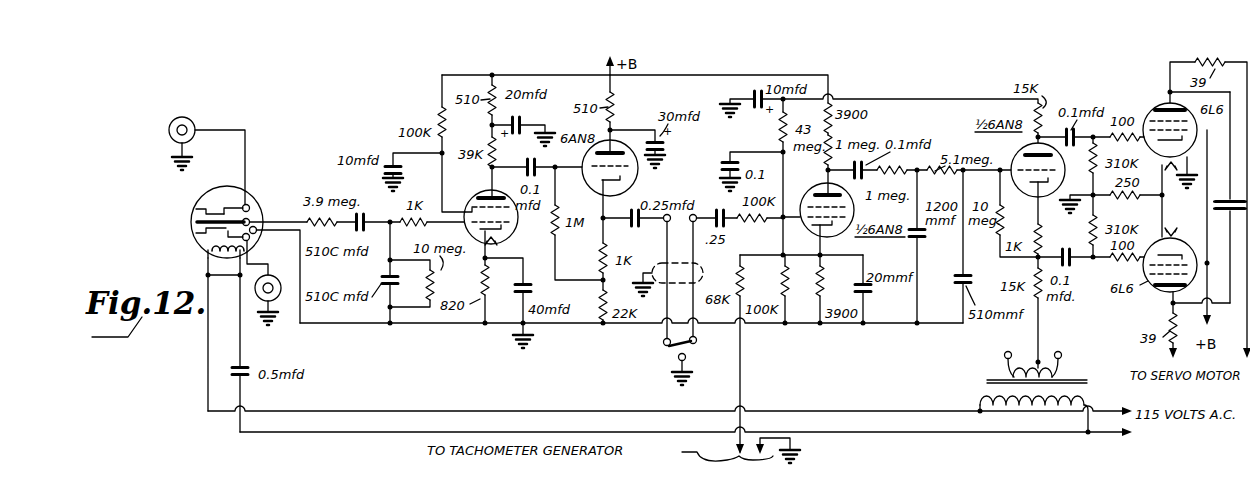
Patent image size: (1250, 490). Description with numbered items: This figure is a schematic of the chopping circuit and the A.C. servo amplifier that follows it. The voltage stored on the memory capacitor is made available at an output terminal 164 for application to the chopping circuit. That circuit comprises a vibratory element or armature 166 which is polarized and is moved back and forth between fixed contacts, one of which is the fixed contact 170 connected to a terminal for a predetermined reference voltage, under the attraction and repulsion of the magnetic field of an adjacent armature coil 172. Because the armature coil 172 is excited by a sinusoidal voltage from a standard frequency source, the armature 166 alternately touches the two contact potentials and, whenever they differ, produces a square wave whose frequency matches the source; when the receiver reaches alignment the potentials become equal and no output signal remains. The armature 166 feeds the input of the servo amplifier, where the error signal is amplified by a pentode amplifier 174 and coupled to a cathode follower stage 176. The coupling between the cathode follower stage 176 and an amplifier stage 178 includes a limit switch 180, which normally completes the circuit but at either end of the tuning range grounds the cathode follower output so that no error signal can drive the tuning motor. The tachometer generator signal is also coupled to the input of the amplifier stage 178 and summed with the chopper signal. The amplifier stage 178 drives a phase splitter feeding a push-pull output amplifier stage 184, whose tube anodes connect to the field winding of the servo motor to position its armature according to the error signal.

The output terminal 164 is at (228, 200).
The armature 166 is at (195, 209).
The fixed contact 170 is at (195, 233).
The armature coil 172 is at (204, 252).
The pentode amplifier 174 is at (478, 190).
The cathode follower stage 176 is at (638, 178).
The amplifier stage 178 is at (813, 182).
The limit switch 180 is at (666, 348).
The push-pull output amplifier stage 184 is at (1200, 210).